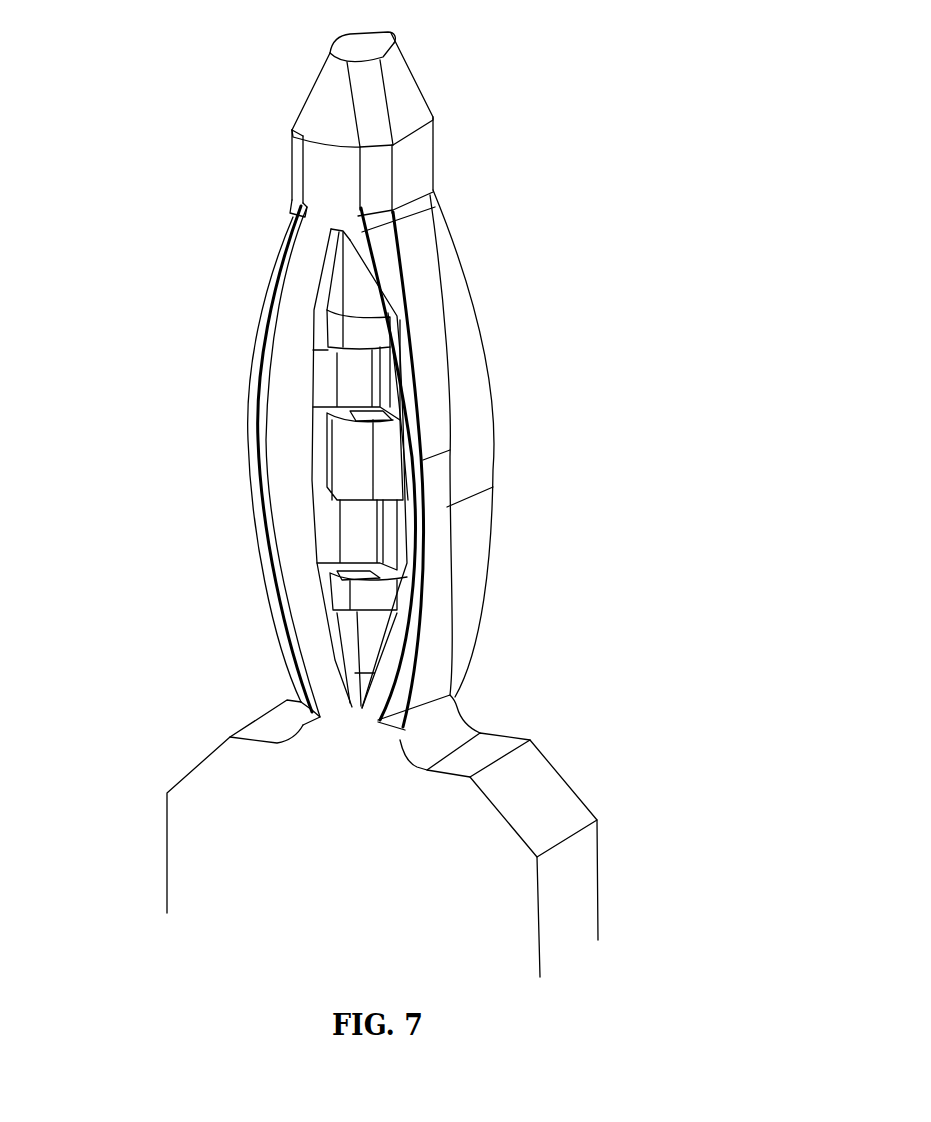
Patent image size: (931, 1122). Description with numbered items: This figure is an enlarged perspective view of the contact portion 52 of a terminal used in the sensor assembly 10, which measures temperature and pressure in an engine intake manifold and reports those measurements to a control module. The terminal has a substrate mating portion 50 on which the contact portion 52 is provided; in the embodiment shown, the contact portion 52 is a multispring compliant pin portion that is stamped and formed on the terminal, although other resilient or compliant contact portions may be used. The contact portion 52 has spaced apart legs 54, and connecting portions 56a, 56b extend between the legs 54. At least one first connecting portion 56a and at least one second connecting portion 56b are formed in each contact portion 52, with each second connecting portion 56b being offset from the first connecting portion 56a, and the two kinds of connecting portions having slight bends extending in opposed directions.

The sensor assembly 10 is at (637, 760).
The substrate mating portion 50 is at (637, 245).
The contact portion 52 is at (537, 387).
The legs 54 is at (283, 260).
The first connecting portion 56a is at (330, 467).
The second connecting portion 56b is at (383, 525).